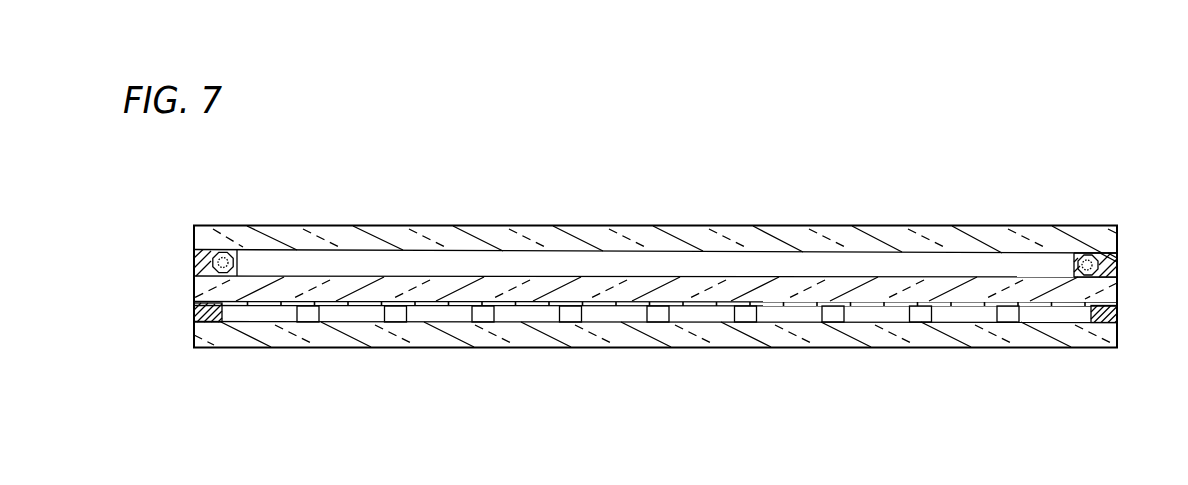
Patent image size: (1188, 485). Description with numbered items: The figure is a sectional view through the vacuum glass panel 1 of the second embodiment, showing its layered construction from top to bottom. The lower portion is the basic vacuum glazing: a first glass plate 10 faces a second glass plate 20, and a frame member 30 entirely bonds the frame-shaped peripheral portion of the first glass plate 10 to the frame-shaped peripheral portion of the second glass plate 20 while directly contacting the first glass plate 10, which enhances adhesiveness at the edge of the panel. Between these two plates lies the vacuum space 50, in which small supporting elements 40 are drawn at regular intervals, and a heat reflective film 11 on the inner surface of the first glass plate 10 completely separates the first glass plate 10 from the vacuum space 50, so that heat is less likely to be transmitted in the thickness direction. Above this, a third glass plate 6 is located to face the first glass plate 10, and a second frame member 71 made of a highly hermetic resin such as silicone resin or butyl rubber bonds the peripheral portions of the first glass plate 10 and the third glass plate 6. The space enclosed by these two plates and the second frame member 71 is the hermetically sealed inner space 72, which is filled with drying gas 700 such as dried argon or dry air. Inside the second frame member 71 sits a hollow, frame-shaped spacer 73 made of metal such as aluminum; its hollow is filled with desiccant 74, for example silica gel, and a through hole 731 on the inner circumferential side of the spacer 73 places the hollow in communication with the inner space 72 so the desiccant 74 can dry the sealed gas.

The vacuum glass panel 1 is at (1154, 165).
The third glass plate 6 is at (892, 237).
The drying gas 700 is at (533, 262).
The inner space 72 is at (438, 259).
The desiccant 74 is at (200, 263).
The through hole 731 is at (241, 264).
The spacer 73 is at (1099, 258).
The second frame member 71 is at (1099, 259).
The first glass plate 10 is at (713, 284).
The heat reflective film 11 is at (817, 284).
The vacuum space 50 is at (440, 312).
The spacers 40 is at (308, 321).
The frame member 30 is at (1113, 318).
The second glass plate 20 is at (688, 338).